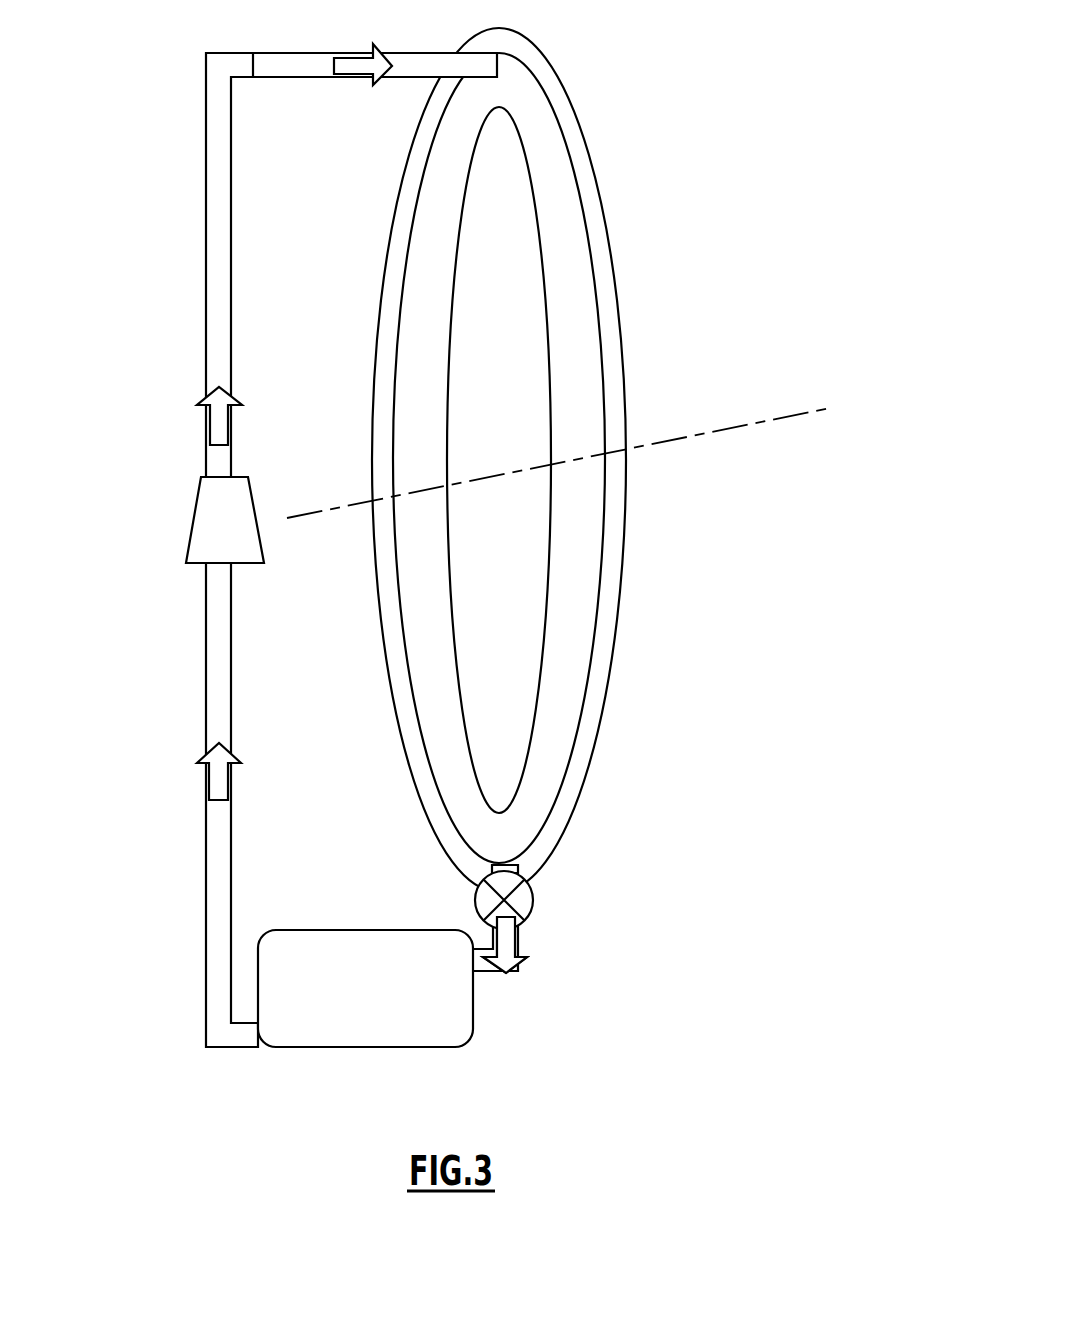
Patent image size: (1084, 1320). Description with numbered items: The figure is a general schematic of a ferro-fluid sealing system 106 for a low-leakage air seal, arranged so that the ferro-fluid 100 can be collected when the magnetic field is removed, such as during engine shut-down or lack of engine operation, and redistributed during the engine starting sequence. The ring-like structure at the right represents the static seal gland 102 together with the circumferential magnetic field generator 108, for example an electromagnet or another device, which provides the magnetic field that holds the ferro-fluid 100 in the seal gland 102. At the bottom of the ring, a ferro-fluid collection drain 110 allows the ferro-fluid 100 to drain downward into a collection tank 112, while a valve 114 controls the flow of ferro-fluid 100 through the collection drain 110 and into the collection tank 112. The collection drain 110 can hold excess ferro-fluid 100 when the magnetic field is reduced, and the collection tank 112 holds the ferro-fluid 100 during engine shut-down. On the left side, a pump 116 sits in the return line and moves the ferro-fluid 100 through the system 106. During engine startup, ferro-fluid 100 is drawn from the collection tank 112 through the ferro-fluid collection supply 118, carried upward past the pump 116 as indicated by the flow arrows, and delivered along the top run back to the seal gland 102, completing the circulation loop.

The ferro-fluid 100 is at (587, 323).
The static seal gland 102 is at (603, 373).
The ferro-fluid sealing system 106 is at (484, 537).
The circumferential magnetic field generator 108 is at (610, 243).
The ferro-fluid collection drain 110 is at (519, 865).
The collection tank 112 is at (473, 1018).
The valve 114 is at (533, 910).
The pump 116 is at (204, 527).
The ferro-fluid collection supply 118 is at (222, 53).